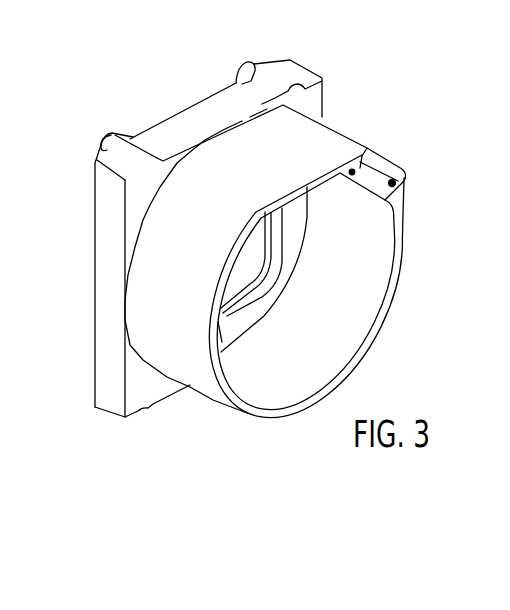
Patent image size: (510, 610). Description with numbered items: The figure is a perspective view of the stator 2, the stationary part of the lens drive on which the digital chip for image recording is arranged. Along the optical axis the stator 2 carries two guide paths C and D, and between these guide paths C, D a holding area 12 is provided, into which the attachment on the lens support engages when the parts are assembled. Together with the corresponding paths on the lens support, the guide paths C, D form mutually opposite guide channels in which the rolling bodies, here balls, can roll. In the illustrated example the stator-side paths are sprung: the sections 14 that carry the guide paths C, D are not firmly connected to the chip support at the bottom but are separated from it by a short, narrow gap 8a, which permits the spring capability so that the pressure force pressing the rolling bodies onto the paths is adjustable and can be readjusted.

The gap 8a is at (259, 88).
The sections 14 is at (306, 128).
The holding area 12 is at (399, 153).
The guide path C is at (396, 184).
The guide path D is at (354, 170).
The stator 2 is at (343, 327).